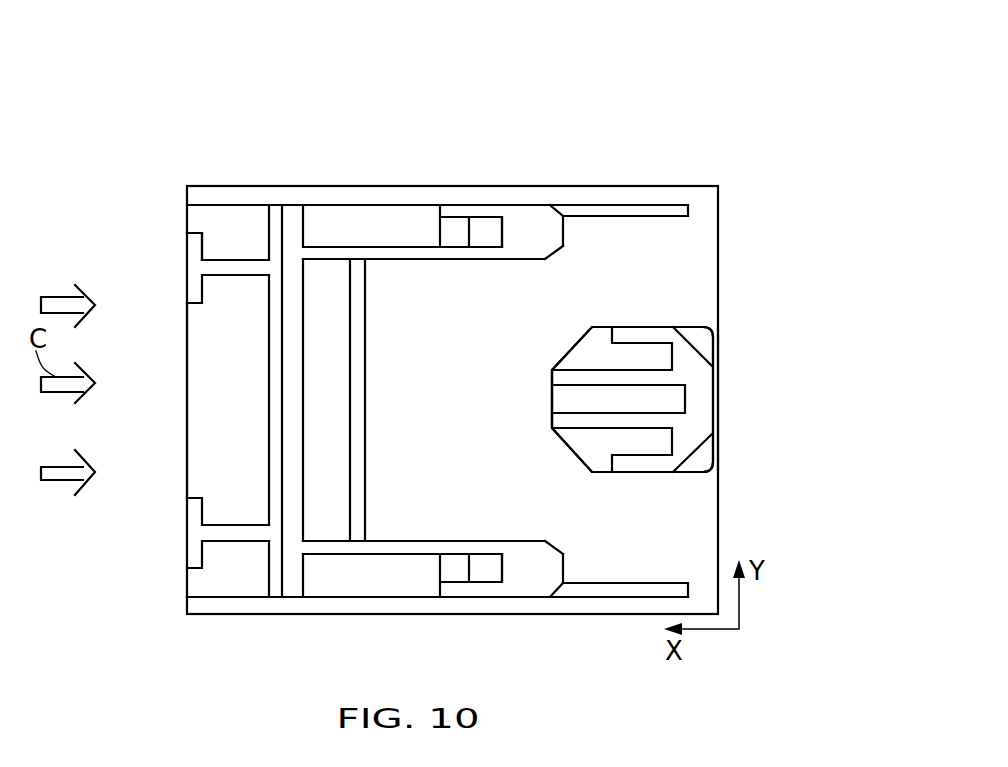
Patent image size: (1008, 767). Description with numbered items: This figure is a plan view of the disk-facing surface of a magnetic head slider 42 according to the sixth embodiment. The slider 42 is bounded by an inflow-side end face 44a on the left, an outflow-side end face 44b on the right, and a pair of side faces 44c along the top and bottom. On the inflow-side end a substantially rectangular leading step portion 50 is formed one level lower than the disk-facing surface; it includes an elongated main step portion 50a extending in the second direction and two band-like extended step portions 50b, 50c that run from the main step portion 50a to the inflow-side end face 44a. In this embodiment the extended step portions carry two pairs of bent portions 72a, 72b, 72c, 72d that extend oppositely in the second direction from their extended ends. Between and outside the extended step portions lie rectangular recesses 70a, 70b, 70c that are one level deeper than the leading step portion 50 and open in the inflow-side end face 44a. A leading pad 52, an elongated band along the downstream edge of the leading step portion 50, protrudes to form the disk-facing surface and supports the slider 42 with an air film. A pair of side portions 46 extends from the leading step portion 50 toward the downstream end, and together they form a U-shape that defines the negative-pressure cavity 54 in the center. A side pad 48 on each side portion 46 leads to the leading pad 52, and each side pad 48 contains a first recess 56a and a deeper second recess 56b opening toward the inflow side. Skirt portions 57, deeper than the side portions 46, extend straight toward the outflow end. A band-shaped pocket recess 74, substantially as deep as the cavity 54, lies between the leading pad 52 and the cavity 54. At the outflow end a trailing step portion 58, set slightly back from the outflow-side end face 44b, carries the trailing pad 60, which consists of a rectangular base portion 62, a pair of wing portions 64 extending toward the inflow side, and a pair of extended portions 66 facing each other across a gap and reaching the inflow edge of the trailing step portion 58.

The slider 42 is at (317, 614).
The inflow-side end face 44a is at (190, 349).
The outflow-side end face 44b is at (722, 437).
The side faces 44c is at (614, 186).
The side portions 46 is at (490, 260).
The side pad 48 is at (534, 222).
The leading step portion 50 is at (224, 229).
The main step portion 50a is at (275, 218).
The extended step portion 50b is at (228, 267).
The extended step portion 50c is at (233, 535).
The leading pad 52 is at (300, 463).
The negative-pressure cavity 54 is at (470, 378).
The first recess 56a is at (487, 230).
The second recess 56b is at (452, 230).
The skirt portions 57 is at (670, 208).
The trailing step portion 58 is at (572, 363).
The trailing pad 60 is at (690, 388).
The base portion 62 is at (700, 407).
The wing portions 64 is at (640, 338).
The extended portions 66 is at (558, 378).
The recess 70a is at (247, 218).
The recess 70b is at (193, 447).
The recess 70c is at (230, 585).
The bent portion 72a is at (193, 291).
The bent portion 72b is at (193, 512).
The bent portion 72c is at (193, 245).
The bent portion 72d is at (193, 557).
The pocket recess 74 is at (333, 302).